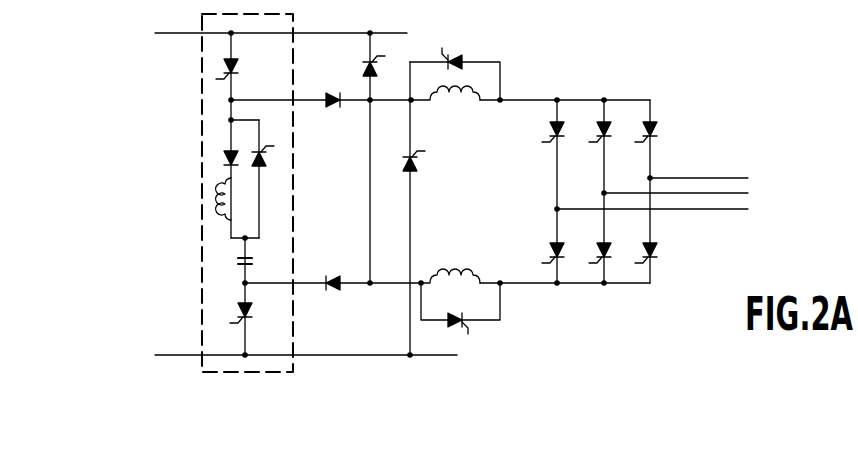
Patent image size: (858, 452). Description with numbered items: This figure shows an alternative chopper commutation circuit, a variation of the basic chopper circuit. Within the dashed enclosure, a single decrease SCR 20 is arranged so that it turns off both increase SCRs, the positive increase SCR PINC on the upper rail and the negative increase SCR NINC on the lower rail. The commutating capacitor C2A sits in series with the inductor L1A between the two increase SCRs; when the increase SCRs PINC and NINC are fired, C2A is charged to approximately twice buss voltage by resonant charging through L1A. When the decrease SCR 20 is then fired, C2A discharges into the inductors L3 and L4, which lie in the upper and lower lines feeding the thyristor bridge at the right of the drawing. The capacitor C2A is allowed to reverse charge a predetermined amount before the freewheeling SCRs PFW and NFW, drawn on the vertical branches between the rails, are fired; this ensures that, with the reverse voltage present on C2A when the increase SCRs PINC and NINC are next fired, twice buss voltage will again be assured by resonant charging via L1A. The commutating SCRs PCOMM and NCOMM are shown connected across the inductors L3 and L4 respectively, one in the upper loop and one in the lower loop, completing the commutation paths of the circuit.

The decrease SCR 20 is at (261, 170).
The inductor L1A is at (222, 203).
The commutating capacitor C2A is at (261, 258).
The inductor L3 is at (445, 111).
The inductor L4 is at (450, 265).
The positive increase SCR PINC is at (247, 63).
The negative increase SCR NINC is at (260, 324).
The positive freewheeling SCR PFW is at (433, 168).
The negative freewheeling SCR NFW is at (353, 65).
The positive commutating SCR PCOMM is at (471, 50).
The negative commutating SCR NCOMM is at (484, 334).